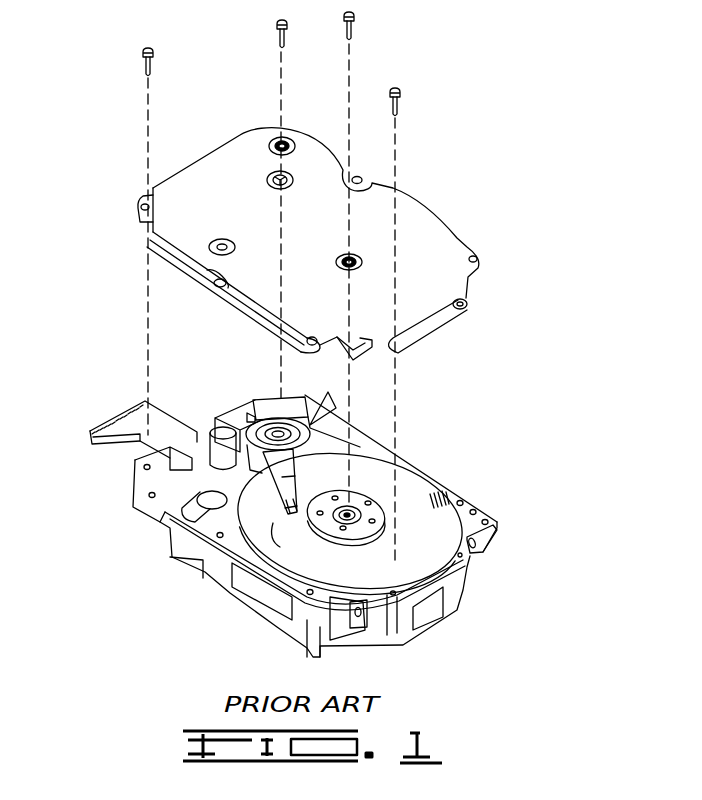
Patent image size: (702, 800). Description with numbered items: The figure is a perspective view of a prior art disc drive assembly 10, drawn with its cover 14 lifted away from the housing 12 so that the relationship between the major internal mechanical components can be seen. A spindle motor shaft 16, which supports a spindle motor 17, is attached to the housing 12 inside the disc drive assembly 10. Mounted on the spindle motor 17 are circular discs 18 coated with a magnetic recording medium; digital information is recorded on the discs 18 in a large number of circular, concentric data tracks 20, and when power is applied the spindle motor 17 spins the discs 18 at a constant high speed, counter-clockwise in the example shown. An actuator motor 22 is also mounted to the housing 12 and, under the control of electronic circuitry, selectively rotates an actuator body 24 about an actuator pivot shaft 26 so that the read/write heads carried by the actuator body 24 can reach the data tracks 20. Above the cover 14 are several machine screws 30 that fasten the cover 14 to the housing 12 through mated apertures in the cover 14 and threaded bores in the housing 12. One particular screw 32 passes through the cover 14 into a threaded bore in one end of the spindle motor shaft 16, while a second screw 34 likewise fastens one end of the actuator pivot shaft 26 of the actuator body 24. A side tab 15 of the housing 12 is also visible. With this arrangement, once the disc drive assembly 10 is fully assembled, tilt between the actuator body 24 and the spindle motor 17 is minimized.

The disc drive assembly 10 is at (455, 410).
The housing 12 is at (185, 549).
The cover 14 is at (427, 226).
The mounting tab 15 is at (477, 548).
The spindle motor shaft 16 is at (355, 518).
The spindle motor 17 is at (349, 512).
The circular discs 18 is at (410, 485).
The data tracks 20 is at (465, 500).
The actuator motor 22 is at (321, 399).
The actuator body 24 is at (299, 467).
The actuator pivot shaft 26 is at (253, 403).
The machine screws 30 is at (143, 53).
The screw 32 is at (358, 17).
The second screw 34 is at (276, 24).